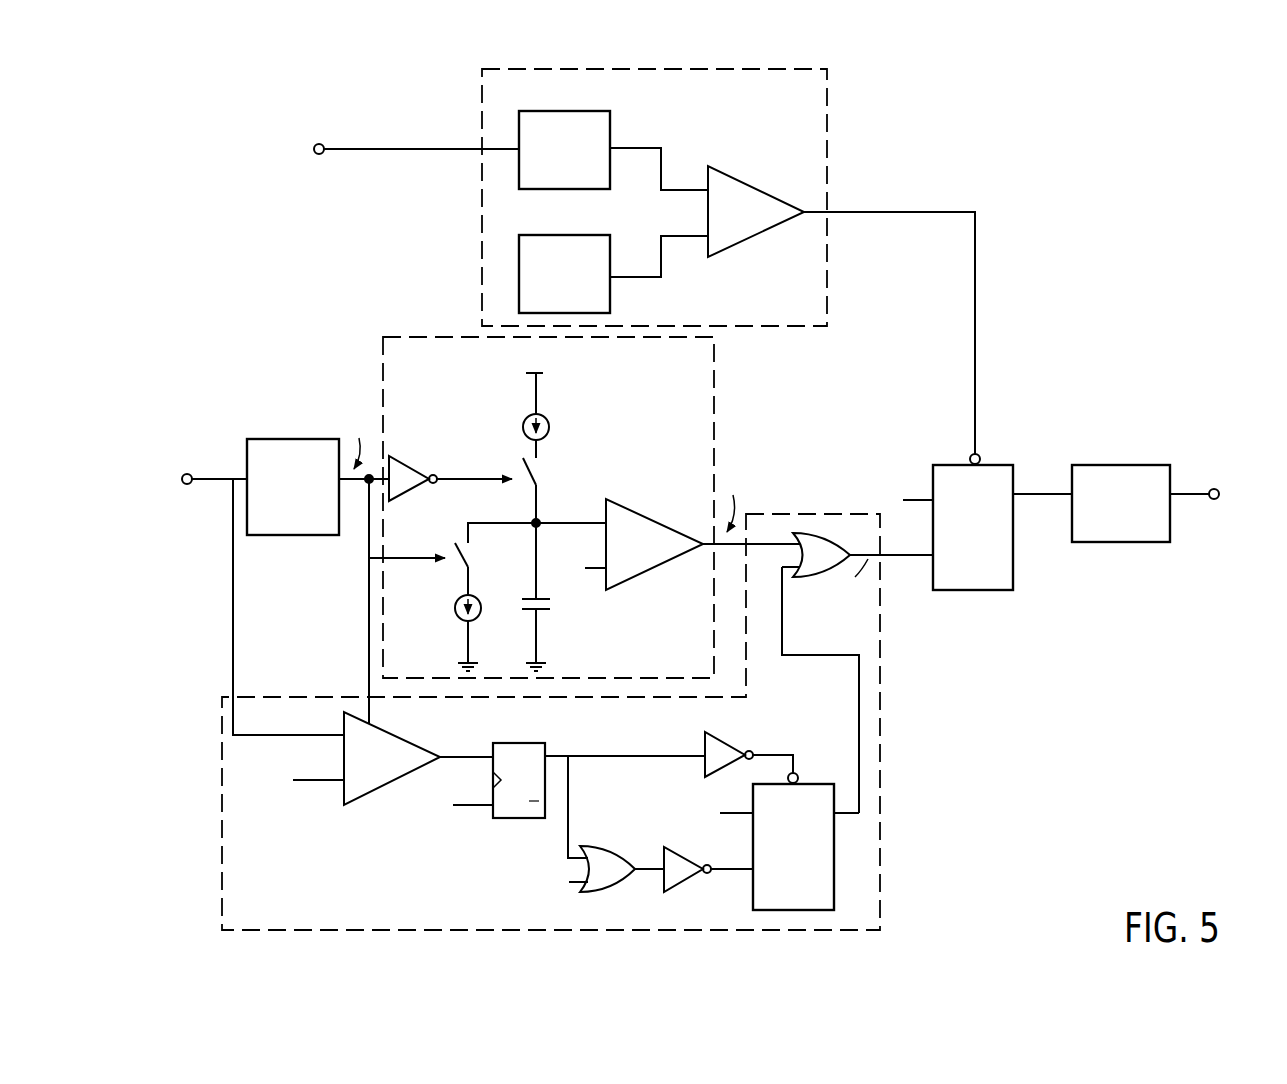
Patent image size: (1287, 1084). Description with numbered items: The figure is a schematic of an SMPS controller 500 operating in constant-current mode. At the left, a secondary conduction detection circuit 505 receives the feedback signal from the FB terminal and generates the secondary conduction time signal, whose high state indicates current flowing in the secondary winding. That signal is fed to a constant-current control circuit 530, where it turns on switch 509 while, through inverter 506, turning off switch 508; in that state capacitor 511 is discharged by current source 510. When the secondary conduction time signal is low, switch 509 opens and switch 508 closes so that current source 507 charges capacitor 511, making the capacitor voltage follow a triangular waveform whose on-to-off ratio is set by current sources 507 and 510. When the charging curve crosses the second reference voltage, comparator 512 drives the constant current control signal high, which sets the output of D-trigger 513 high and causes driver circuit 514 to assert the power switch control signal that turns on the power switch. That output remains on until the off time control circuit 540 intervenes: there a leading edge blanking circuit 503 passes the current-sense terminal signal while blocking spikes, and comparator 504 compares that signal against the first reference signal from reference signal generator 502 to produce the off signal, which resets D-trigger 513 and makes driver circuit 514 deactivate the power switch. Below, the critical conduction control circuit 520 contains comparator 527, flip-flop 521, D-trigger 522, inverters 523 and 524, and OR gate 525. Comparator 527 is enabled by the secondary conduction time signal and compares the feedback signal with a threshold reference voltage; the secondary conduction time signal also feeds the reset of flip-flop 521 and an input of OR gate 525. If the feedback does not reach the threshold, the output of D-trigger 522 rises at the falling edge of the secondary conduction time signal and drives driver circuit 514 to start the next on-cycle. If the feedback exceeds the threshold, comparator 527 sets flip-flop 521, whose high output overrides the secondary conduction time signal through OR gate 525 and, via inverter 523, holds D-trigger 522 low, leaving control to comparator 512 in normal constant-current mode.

The SMPS controller 500 is at (1190, 134).
The reference signal generator 502 is at (559, 235).
The leading edge blanking circuit 503 is at (575, 111).
The comparator 504 is at (760, 185).
The secondary conduction detection circuit 505 is at (290, 439).
The inverter 506 is at (417, 470).
The current source 507 is at (553, 420).
The switch 508 is at (547, 477).
The switch 509 is at (470, 563).
The current source 510 is at (455, 606).
The capacitor 511 is at (553, 607).
The comparator 512 is at (662, 522).
The D-trigger 513 is at (997, 463).
The driver circuit 514 is at (1112, 465).
The critical conduction control circuit 520 is at (883, 722).
The flip-flop 521 is at (530, 742).
The D-trigger 522 is at (835, 880).
The inverter 523 is at (668, 890).
The inverter 524 is at (717, 733).
The OR gate 525 is at (620, 853).
The comparator 527 is at (390, 786).
The constant-current control circuit 530 is at (713, 385).
The off time control circuit 540 is at (832, 150).